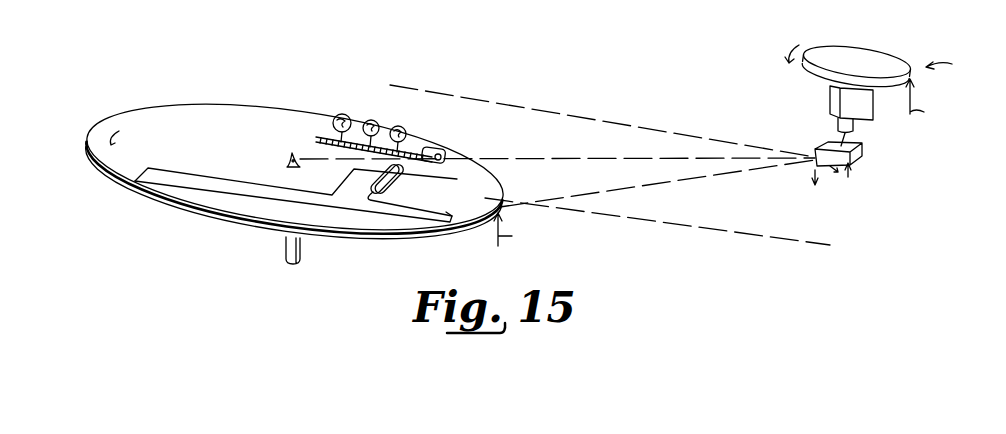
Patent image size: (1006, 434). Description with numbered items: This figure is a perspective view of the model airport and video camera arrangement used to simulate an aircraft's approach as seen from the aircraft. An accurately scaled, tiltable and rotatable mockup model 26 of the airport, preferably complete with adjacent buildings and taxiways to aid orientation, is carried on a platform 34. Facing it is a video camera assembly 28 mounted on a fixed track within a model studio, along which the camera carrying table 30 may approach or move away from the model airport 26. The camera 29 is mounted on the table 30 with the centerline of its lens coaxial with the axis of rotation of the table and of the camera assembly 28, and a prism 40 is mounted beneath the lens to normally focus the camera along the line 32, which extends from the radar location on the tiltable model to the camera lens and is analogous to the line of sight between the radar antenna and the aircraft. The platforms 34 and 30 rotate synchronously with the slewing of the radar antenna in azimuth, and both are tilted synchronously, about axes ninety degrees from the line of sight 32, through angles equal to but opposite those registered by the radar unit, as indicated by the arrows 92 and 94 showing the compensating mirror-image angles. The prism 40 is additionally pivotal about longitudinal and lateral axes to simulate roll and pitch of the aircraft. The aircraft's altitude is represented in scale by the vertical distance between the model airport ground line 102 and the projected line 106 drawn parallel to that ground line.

The airport mounting platform 34 is at (277, 104).
The mockup model of the airport 26 is at (336, 113).
The camera carrying table 30 is at (863, 54).
The video camera assembly 28 is at (868, 68).
The camera 29 is at (832, 102).
The arrow 94 is at (926, 101).
The prism 40 is at (860, 148).
The line of sight 32 is at (579, 143).
The projected line 106 is at (602, 119).
The model airport ground line 102 is at (612, 212).
The arrow 92 is at (513, 229).